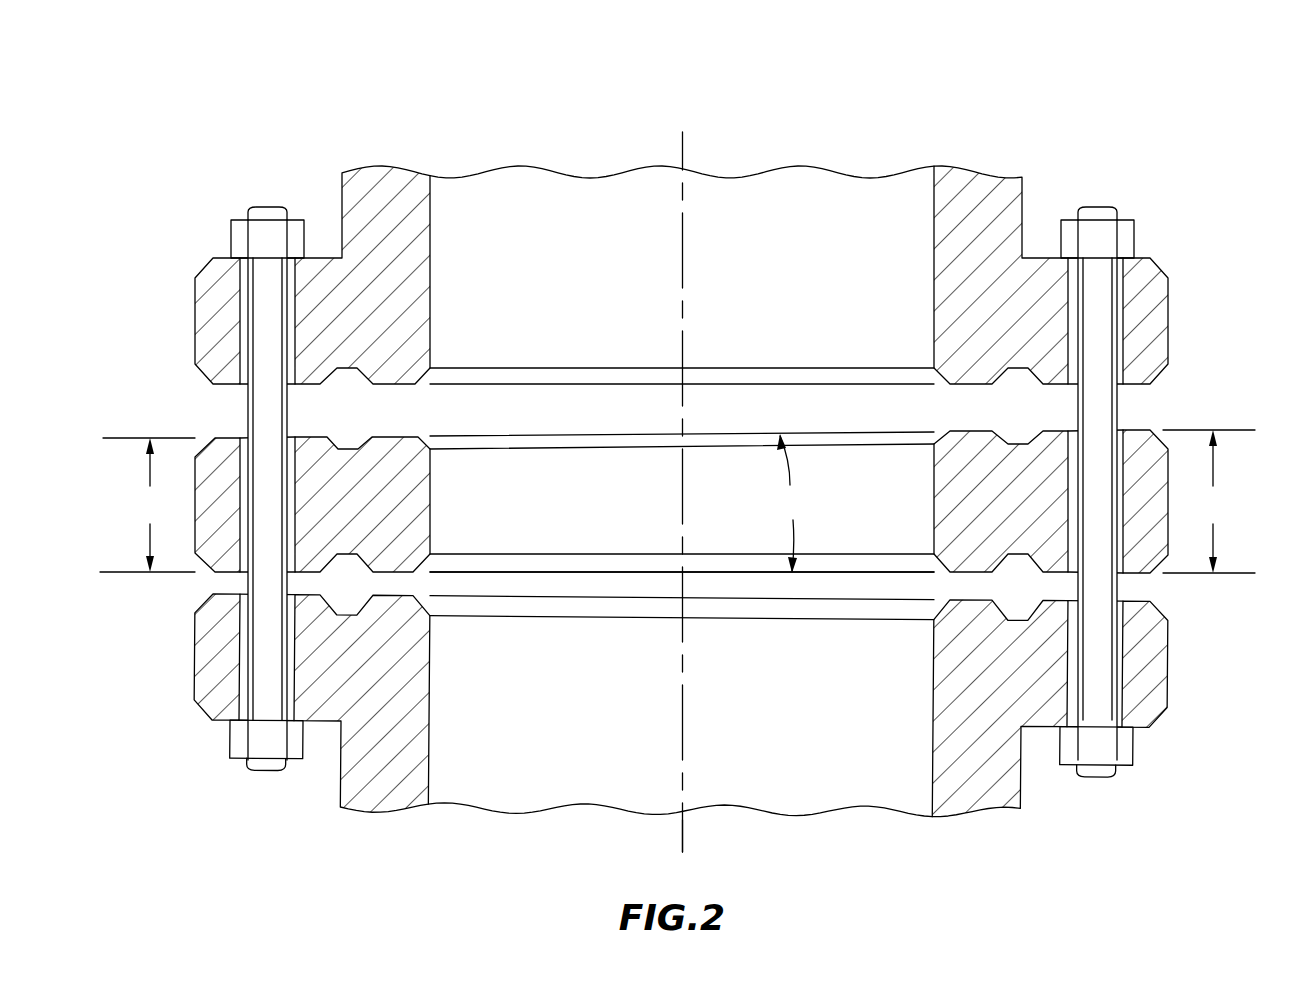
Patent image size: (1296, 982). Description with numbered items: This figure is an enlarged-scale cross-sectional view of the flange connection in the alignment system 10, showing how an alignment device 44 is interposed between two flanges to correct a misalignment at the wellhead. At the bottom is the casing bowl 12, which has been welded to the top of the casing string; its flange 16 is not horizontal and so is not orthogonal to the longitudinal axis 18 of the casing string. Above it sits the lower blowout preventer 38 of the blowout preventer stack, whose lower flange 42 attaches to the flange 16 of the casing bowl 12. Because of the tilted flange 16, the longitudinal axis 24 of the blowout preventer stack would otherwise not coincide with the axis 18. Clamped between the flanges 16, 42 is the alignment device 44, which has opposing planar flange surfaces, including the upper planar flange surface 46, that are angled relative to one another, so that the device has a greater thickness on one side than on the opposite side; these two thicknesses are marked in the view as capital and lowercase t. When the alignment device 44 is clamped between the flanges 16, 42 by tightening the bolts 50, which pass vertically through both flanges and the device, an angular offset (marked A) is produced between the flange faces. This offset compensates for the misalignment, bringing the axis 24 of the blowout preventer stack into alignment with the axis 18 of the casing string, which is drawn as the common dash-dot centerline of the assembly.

The alignment system 10 is at (680, 465).
The casing bowl 12 is at (726, 725).
The flange 16 is at (1168, 660).
The longitudinal axis 18 is at (683, 832).
The longitudinal axis 24 is at (683, 148).
The lower blowout preventer 38 is at (726, 256).
The lower flange 42 is at (1168, 322).
The alignment device 44 is at (1132, 430).
The planar flange surface 46 is at (726, 464).
The bolts 50 is at (266, 207).